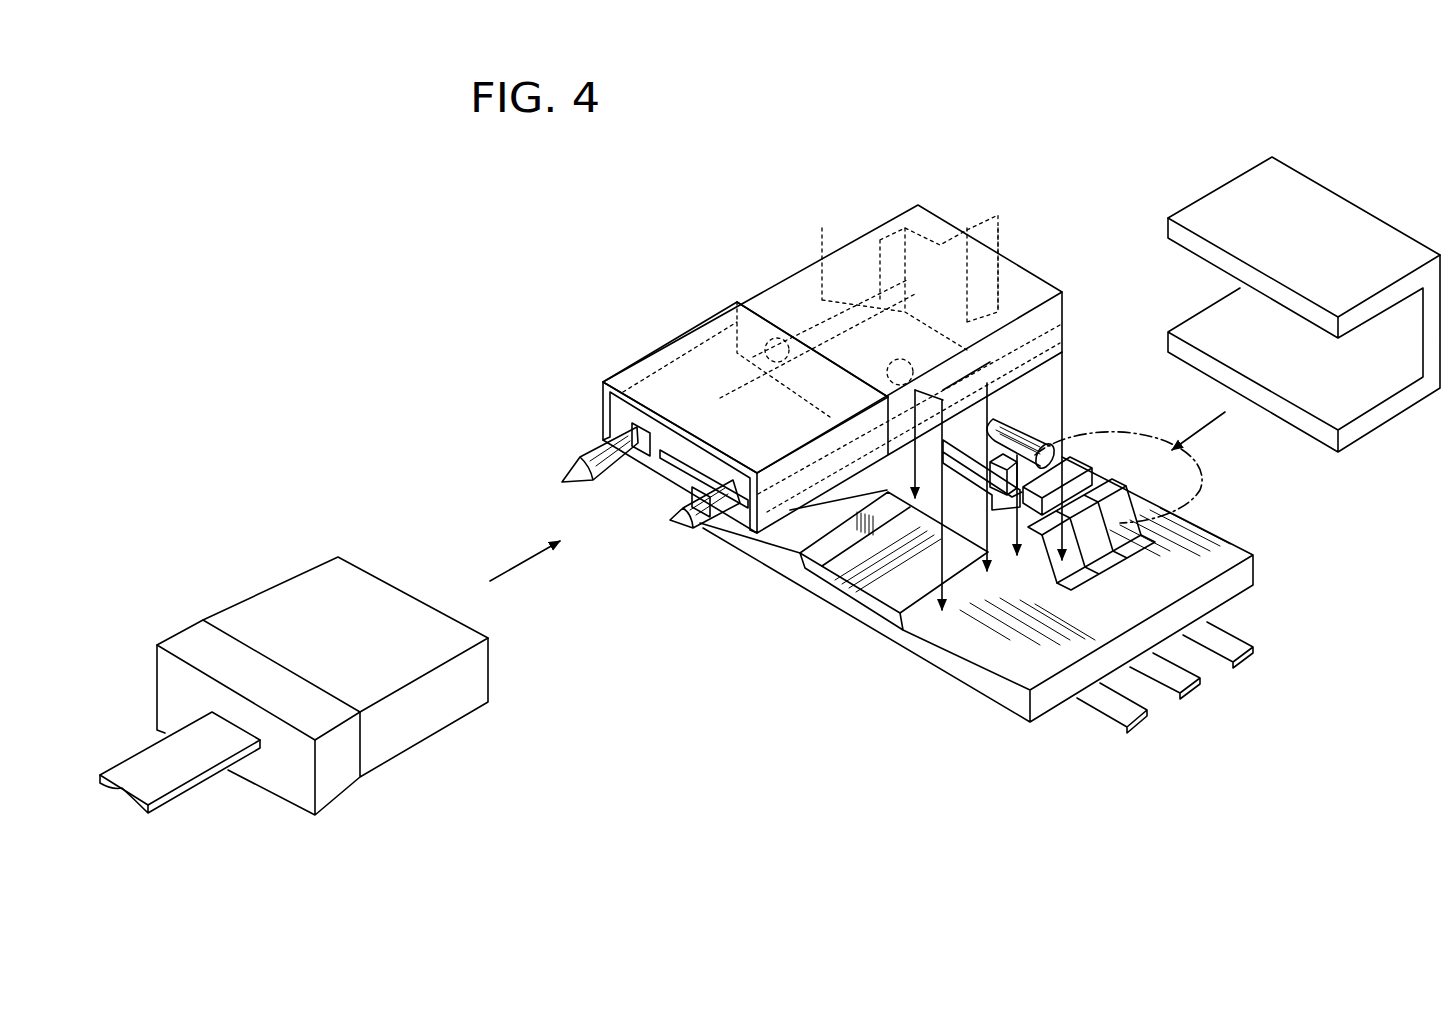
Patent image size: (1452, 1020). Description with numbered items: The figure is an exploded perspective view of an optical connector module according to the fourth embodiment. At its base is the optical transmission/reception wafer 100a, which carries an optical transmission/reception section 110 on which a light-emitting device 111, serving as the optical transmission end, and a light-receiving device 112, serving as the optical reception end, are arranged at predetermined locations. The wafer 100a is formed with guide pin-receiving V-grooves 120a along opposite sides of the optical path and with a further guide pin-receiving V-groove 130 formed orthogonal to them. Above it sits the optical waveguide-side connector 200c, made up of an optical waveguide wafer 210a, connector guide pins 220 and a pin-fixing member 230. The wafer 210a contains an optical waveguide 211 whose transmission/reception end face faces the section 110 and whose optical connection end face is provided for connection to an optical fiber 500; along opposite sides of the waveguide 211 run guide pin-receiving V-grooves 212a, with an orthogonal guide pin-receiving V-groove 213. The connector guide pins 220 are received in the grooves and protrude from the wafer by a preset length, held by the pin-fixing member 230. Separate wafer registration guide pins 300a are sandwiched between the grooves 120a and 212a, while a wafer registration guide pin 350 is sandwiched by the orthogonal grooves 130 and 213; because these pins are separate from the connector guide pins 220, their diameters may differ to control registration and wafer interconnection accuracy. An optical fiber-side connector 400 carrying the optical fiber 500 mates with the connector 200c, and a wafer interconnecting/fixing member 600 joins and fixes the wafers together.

The optical transmission/reception wafer 100a is at (1026, 597).
The optical transmission/reception section 110 is at (1174, 487).
The light-emitting device 111 is at (1094, 478).
The light-receiving device 112 is at (1075, 446).
The guide pin-receiving V-grooves 120a is at (915, 622).
The guide pin-receiving V-groove 130 is at (1006, 557).
The plug assembly 200c is at (809, 351).
The optical waveguide wafer 210a is at (896, 326).
The optical waveguide 211 is at (670, 476).
The guide pin-receiving V-grooves 212a is at (905, 228).
The guide pin-receiving V-groove 213 is at (967, 228).
The connector guide pins 220 is at (592, 455).
The pin-fixing member 230 is at (669, 369).
The wafer registration guide pins 300a is at (822, 300).
The wafer registration guide pin 350 is at (1010, 420).
The optical fiber-side connector 400 is at (262, 596).
The optical fiber 500 is at (181, 800).
The wafer interconnecting/fixing member 600 is at (1300, 186).